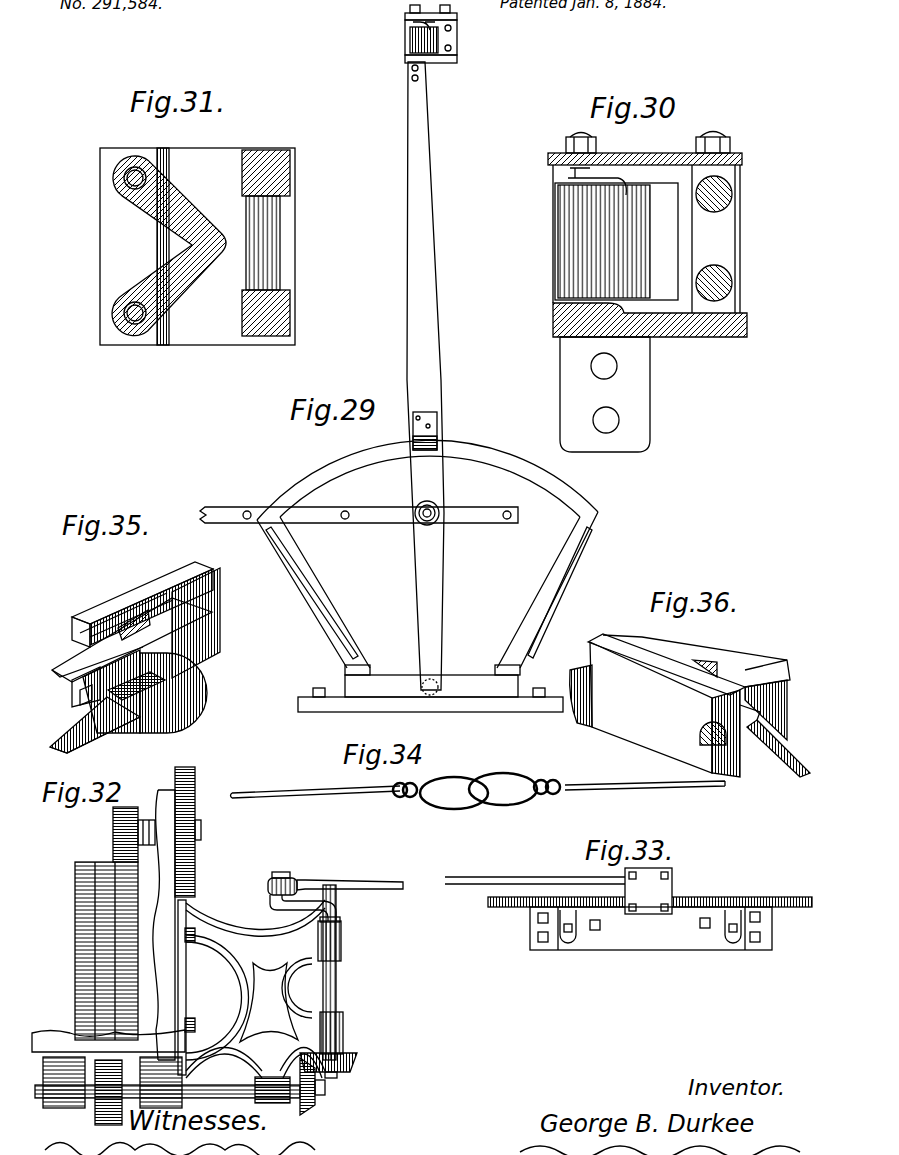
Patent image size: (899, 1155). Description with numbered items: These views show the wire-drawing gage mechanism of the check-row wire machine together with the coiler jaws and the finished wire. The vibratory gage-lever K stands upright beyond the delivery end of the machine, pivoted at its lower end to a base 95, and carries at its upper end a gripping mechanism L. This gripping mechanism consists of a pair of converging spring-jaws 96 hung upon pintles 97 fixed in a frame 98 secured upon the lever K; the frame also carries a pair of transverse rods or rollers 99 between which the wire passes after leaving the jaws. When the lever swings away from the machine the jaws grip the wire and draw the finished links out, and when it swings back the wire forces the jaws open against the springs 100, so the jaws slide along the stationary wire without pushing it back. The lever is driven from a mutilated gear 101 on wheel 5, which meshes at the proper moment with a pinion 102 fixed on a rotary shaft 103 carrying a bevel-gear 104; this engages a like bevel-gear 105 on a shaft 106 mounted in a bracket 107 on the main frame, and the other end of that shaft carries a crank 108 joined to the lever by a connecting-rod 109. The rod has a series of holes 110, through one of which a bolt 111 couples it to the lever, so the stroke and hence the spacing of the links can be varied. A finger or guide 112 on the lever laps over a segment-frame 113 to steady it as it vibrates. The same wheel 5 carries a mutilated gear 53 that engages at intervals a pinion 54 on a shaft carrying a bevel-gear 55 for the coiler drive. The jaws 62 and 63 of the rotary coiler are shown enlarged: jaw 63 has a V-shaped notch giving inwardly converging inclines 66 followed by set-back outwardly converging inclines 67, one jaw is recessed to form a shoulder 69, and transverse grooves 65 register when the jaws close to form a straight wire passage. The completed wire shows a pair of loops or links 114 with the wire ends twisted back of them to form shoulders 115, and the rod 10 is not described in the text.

In FIG. 32, the wheel 5 is at (75, 893).
In FIG. 36, the rod 10 is at (766, 659).
In FIG. 34, the rod 10 is at (491, 795).
In FIG. 32, the mutilated gear 53 is at (159, 925).
In FIG. 32, the pinion 54 is at (134, 827).
In FIG. 32, the bevel-gear 55 is at (197, 832).
In FIG. 36, the sliding jaw 62 is at (690, 700).
In FIG. 35, the sliding jaw 63 is at (136, 625).
In FIG. 35, the transverse groove 65 is at (158, 700).
In FIG. 35, the inwardly converging inclines 66 is at (72, 688).
In FIG. 35, the outwardly converging inclines 67 is at (142, 604).
In FIG. 35, the shoulder 69 is at (145, 691).
In FIG. 29, the base 95 is at (430, 682).
In FIG. 33, the base 95 is at (651, 928).
In FIG. 31, the spring-jaws 96 is at (183, 203).
In FIG. 30, the spring-jaws 96 is at (616, 241).
In FIG. 29, the spring-jaws 96 is at (437, 43).
In FIG. 31, the pintles 97 is at (124, 178).
In FIG. 30, the pintles 97 is at (572, 137).
In FIG. 31, the frame 98 is at (197, 246).
In FIG. 30, the frame 98 is at (647, 302).
In FIG. 29, the frame 98 is at (422, 78).
In FIG. 33, the frame 98 is at (648, 891).
In FIG. 31, the transverse rods or rollers 99 is at (280, 235).
In FIG. 30, the transverse rods or rollers 99 is at (733, 194).
In FIG. 30, the springs 100 is at (568, 178).
In FIG. 29, the springs 100 is at (393, 33).
In FIG. 32, the mutilated gear 101 is at (76, 985).
In FIG. 32, the pinion 102 is at (108, 1099).
In FIG. 32, the rotary shaft 103 is at (230, 1086).
In FIG. 32, the bevel-gear 104 is at (323, 1086).
In FIG. 32, the bevel-gear 105 is at (352, 1063).
In FIG. 32, the shaft 106 is at (347, 972).
In FIG. 32, the bracket 107 is at (251, 989).
In FIG. 32, the crank 108 is at (302, 900).
In FIG. 29, the connecting-rod 109 is at (359, 503).
In FIG. 33, the connecting-rod 109 is at (535, 871).
In FIG. 32, the connecting-rod 109 is at (350, 891).
In FIG. 29, the holes 110 is at (345, 519).
In FIG. 29, the bolt 111 is at (422, 522).
In FIG. 29, the finger or guide 112 is at (437, 428).
In FIG. 29, the segment-frame 113 is at (518, 468).
In FIG. 33, the segment-frame 113 is at (650, 889).
In FIG. 34, the loops or links 114 is at (478, 778).
In FIG. 34, the shoulders 115 is at (397, 798).
In FIG. 29, the vibratory gage-lever K is at (432, 199).
In FIG. 29, the gripping mechanism L is at (490, 28).